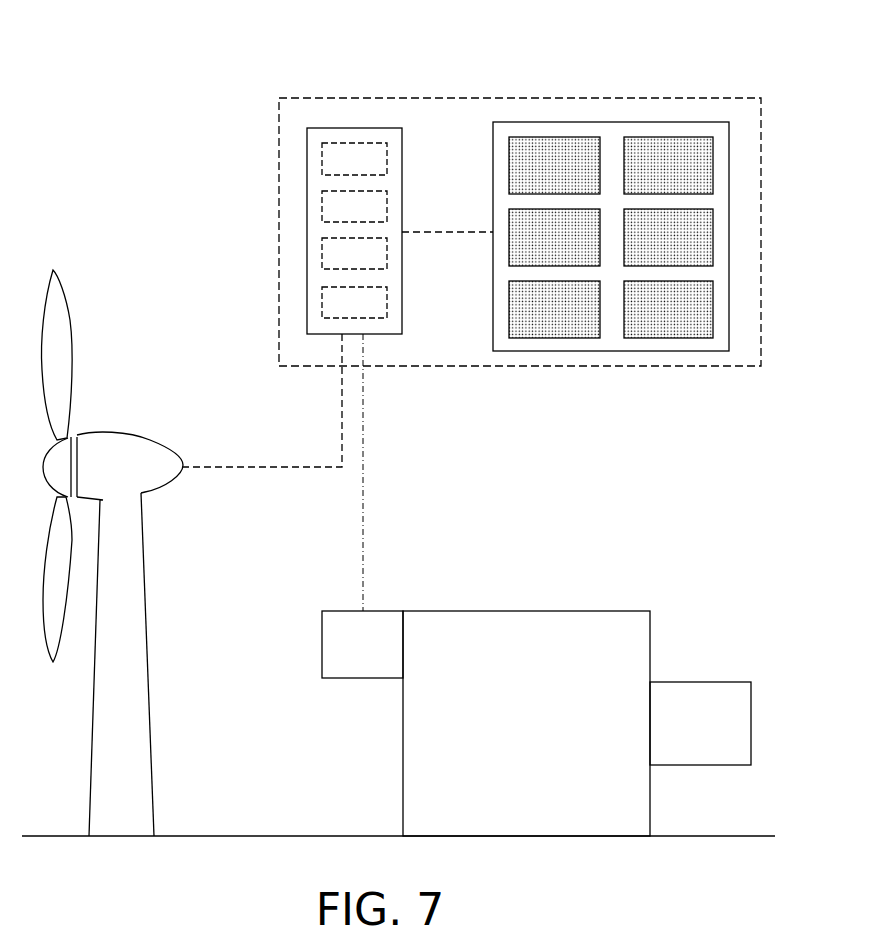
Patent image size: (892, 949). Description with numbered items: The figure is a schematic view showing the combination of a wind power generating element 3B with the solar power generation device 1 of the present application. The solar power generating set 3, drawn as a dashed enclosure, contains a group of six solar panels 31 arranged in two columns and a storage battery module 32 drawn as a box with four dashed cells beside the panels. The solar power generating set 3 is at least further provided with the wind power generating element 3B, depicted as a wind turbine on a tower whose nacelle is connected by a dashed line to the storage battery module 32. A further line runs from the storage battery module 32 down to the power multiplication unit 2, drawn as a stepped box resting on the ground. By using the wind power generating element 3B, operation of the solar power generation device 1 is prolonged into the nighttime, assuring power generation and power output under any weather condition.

The solar power generation device 1 is at (171, 148).
The power multiplication unit 2 is at (530, 625).
The solar power generating set 3 is at (745, 98).
The solar panel 31 is at (548, 150).
The storage battery module 32 is at (330, 127).
The wind power generating element 3B is at (105, 447).